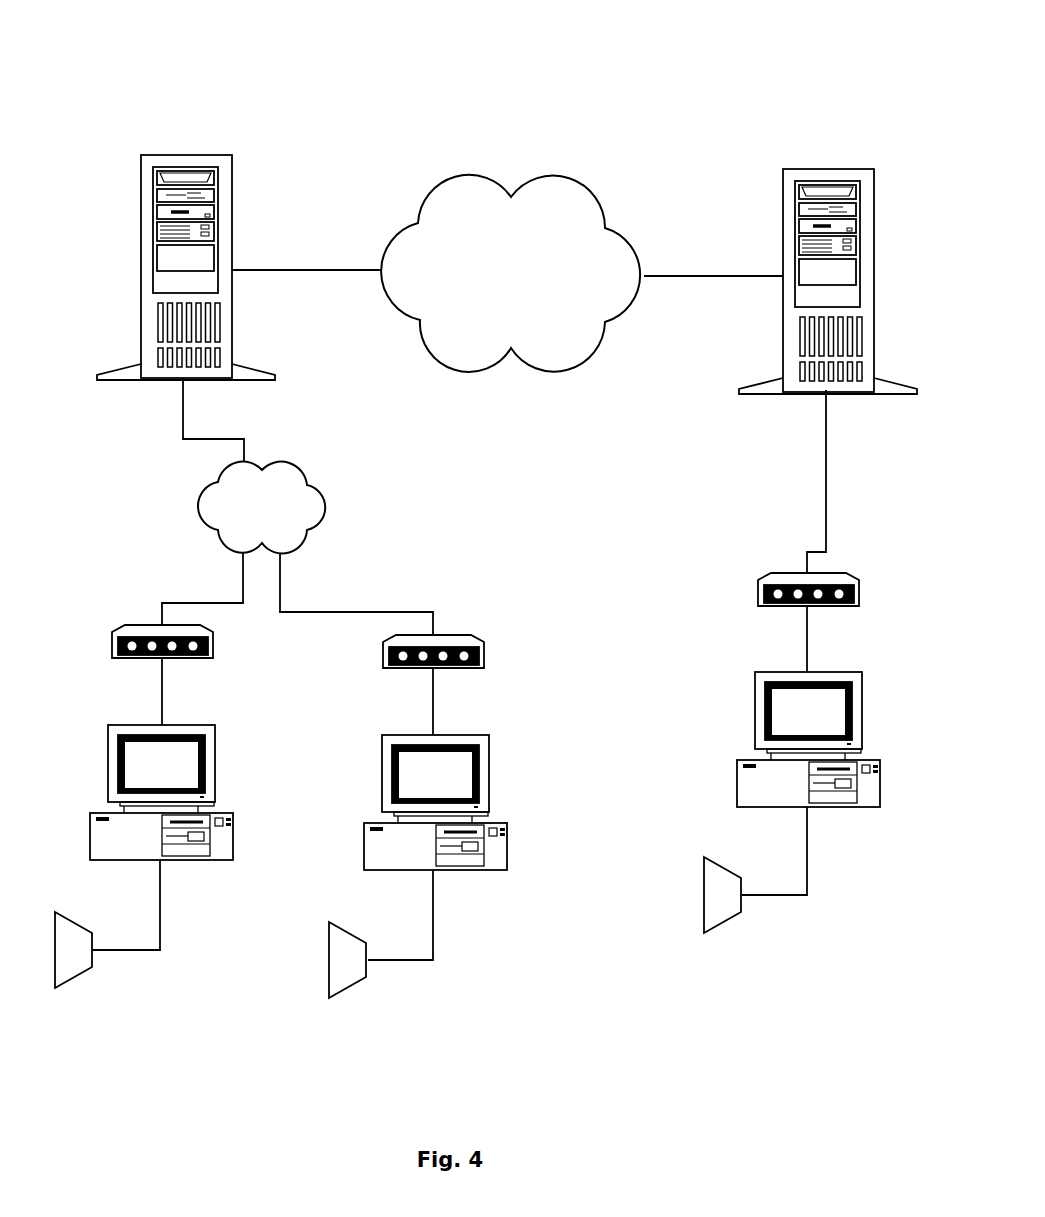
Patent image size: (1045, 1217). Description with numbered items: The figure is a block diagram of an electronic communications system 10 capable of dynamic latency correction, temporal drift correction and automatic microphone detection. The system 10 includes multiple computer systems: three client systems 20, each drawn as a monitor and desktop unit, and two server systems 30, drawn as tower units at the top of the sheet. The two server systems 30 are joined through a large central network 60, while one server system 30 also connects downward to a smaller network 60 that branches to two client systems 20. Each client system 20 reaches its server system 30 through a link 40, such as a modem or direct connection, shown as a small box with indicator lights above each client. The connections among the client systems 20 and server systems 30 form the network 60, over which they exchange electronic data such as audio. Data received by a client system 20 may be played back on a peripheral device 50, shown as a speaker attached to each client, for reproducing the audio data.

The electronic communications system 10 is at (553, 90).
The client system 20 is at (217, 763).
The server system 30 is at (220, 153).
The link 40 is at (112, 640).
The peripheral device 50 is at (72, 978).
The network 60 is at (500, 285).